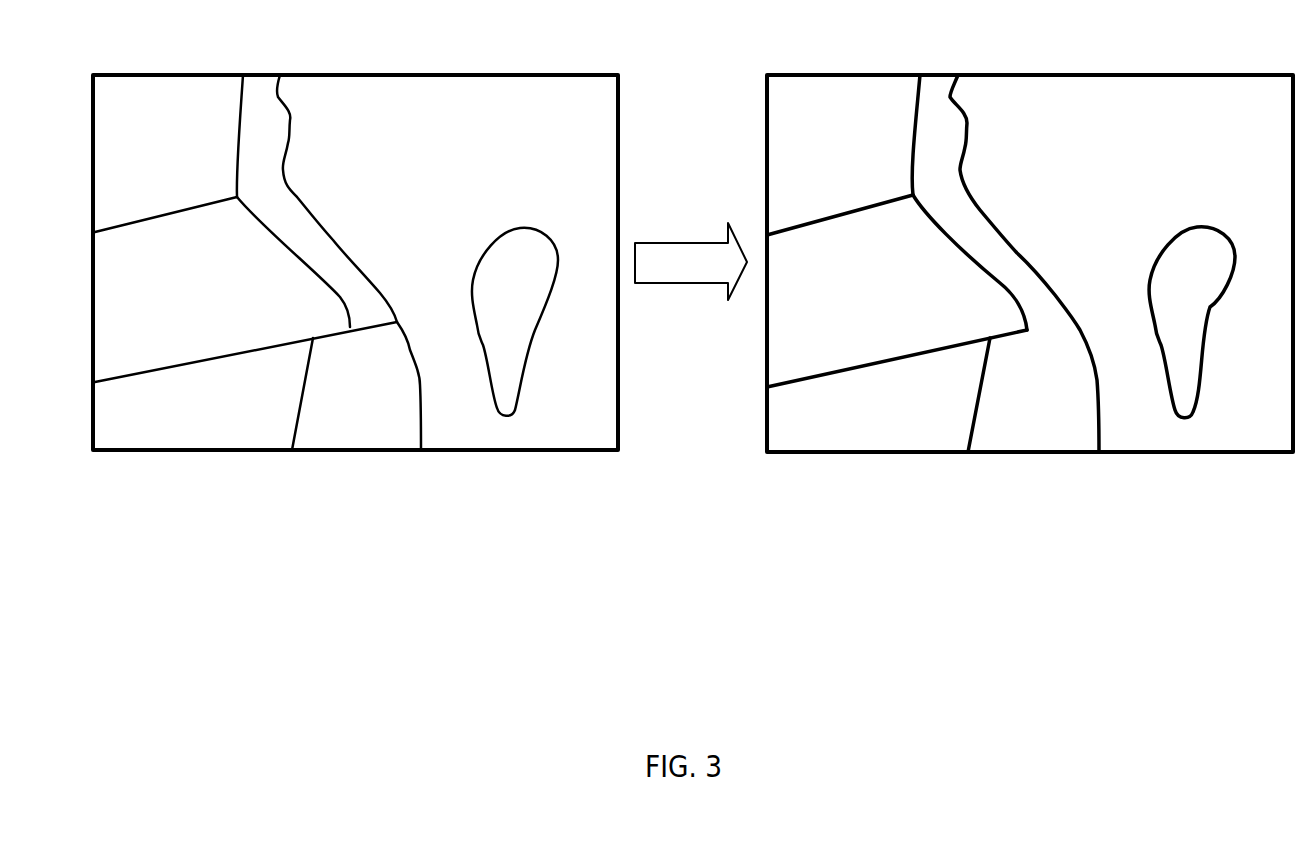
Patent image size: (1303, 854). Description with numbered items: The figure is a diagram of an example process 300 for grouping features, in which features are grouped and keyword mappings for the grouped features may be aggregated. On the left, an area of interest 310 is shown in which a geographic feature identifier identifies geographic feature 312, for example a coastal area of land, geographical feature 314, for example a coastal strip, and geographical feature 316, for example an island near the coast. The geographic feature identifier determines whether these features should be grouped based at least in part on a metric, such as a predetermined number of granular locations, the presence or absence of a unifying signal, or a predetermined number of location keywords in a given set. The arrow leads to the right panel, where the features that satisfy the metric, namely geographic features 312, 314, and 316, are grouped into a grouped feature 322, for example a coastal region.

The process 300 is at (118, 644).
The area of interest 310 is at (618, 66).
The geographic feature 312 is at (373, 412).
The geographical feature 314 is at (340, 270).
The geographical feature 316 is at (510, 365).
The grouped feature 322 is at (1137, 205).